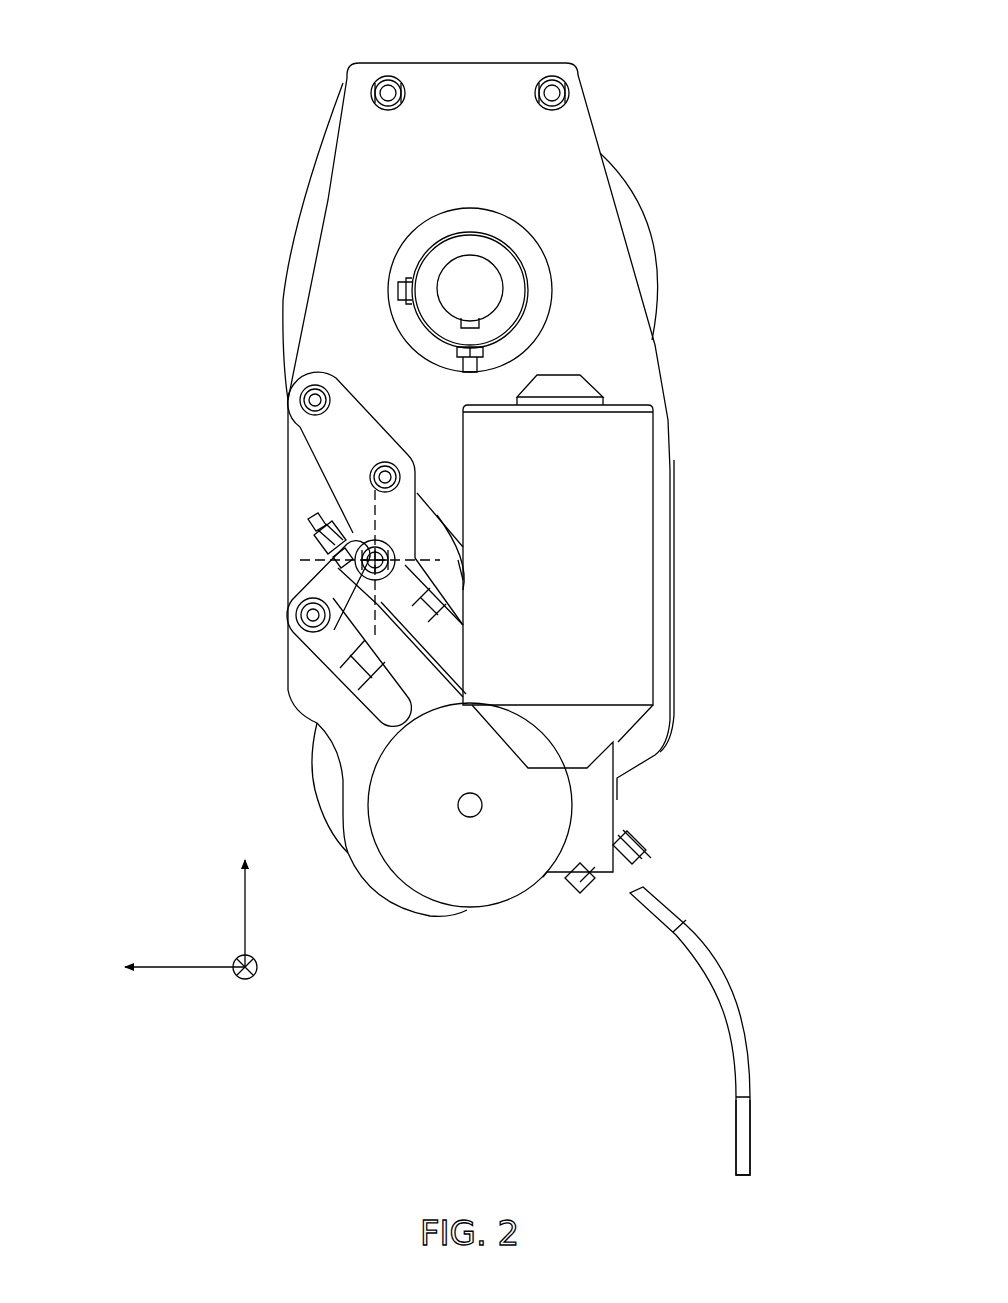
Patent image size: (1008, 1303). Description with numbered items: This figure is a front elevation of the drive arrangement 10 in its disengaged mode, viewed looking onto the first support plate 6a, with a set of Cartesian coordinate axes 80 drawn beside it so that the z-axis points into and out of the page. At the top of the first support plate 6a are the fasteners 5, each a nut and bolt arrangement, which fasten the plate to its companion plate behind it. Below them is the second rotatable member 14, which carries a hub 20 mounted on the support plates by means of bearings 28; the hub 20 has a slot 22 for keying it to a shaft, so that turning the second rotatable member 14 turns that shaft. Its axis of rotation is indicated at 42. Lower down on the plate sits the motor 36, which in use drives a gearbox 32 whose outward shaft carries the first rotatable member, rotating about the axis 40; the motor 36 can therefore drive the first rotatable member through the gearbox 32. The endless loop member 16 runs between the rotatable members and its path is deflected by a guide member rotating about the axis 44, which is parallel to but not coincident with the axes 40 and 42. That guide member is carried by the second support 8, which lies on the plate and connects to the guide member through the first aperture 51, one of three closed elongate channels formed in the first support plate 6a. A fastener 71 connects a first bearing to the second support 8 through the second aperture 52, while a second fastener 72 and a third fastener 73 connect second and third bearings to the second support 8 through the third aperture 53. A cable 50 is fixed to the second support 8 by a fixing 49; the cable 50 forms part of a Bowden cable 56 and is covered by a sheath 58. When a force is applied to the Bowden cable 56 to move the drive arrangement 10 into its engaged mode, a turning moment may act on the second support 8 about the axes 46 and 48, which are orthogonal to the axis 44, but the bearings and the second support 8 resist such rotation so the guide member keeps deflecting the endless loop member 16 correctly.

The fasteners 5 is at (390, 78).
The first support plate 6a is at (585, 100).
The second support 8 is at (345, 400).
The drive arrangement 10 is at (492, 550).
The second rotatable member 14 is at (627, 205).
The endless loop member 16 is at (322, 793).
The hub 20 is at (488, 245).
The slot 22 is at (478, 327).
The bearings 28 is at (430, 228).
The gearbox 32 is at (470, 880).
The motor 36 is at (627, 495).
The axis of rotation 40 is at (472, 800).
The axis of rotation 42 is at (472, 292).
The axis of rotation 44 is at (378, 552).
The axis 46 is at (372, 510).
The axis 48 is at (463, 575).
The fixing 49 is at (310, 545).
The cable 50 is at (447, 650).
The first aperture 51 is at (447, 633).
The second aperture 52 is at (373, 712).
The third aperture 53 is at (418, 518).
The Bowden cable 56 is at (724, 976).
The sheath 58 is at (737, 1040).
The fastener 71 is at (303, 615).
The second fastener 72 is at (388, 470).
The third fastener 73 is at (305, 400).
The Cartesian coordinate axes 80 is at (178, 1012).